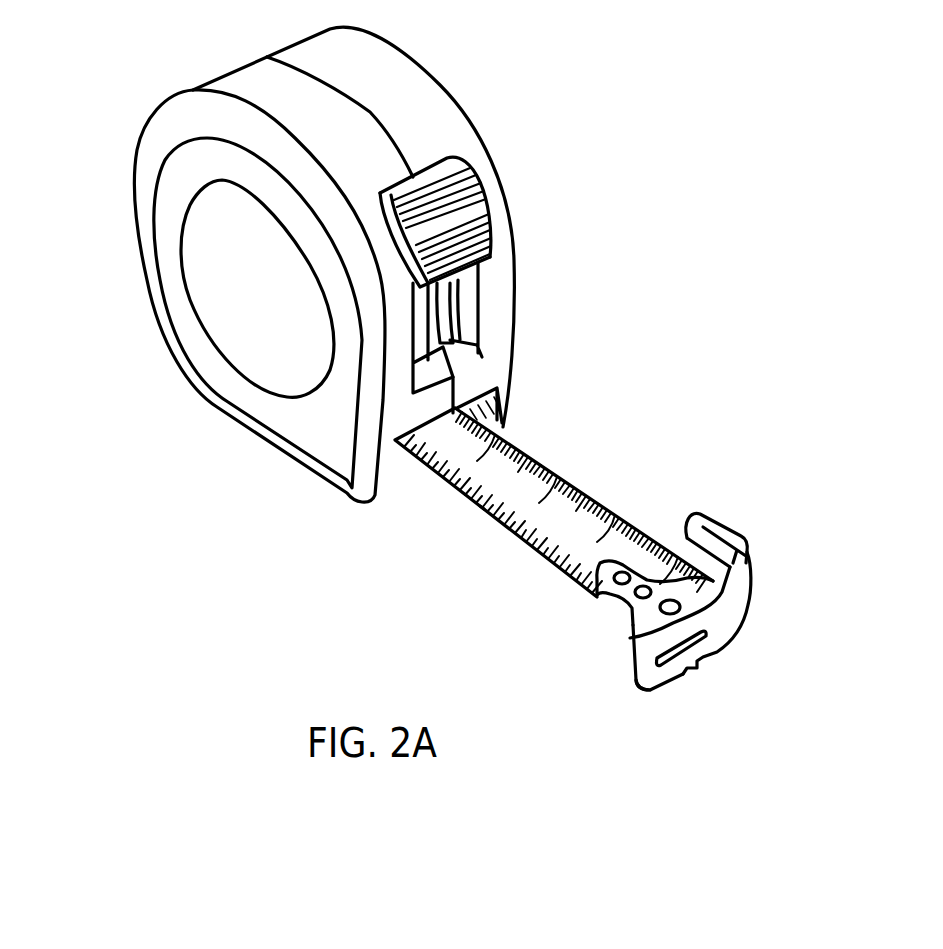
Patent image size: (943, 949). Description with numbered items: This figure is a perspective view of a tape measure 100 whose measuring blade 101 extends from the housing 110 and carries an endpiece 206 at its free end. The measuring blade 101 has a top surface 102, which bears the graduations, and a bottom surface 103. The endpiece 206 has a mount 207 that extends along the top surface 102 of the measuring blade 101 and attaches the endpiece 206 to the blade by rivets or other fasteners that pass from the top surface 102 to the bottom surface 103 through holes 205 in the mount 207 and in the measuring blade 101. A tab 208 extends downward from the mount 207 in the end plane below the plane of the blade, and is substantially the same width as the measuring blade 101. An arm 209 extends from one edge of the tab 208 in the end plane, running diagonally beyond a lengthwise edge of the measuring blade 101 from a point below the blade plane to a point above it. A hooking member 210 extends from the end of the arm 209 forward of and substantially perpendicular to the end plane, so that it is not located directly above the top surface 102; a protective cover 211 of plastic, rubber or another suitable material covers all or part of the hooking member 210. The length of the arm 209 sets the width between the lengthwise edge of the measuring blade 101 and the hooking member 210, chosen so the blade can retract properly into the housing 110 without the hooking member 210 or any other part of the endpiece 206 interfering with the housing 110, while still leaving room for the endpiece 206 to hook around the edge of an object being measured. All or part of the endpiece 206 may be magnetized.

The tape measure 100 is at (523, 55).
The housing 110 is at (144, 126).
The measuring blade 101 is at (520, 441).
The top surface 102 is at (587, 492).
The bottom surface 103 is at (472, 530).
The holes 205 is at (614, 578).
The endpiece 206 is at (624, 638).
The mount 207 is at (623, 595).
The tab 208 is at (636, 672).
The arm 209 is at (749, 590).
The hooking member 210 is at (744, 537).
The protective cover 211 is at (705, 530).